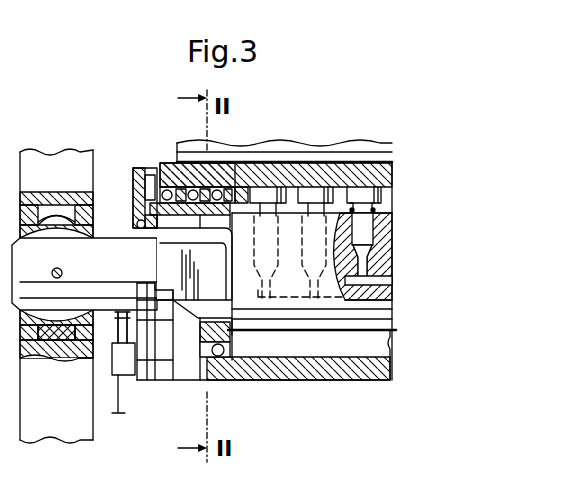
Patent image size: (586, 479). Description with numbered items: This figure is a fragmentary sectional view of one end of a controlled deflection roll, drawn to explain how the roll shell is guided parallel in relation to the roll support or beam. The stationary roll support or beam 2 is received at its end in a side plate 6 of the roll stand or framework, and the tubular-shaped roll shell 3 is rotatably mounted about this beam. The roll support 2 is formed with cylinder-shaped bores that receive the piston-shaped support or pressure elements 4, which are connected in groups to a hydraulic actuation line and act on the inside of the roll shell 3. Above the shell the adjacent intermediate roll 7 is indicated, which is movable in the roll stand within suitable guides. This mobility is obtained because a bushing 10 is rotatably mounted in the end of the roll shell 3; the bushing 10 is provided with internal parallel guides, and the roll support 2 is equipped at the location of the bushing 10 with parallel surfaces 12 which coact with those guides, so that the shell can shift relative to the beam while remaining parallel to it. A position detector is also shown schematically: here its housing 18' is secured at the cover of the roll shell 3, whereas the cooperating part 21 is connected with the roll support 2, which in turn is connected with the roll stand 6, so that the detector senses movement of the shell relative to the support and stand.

The roll support or beam 2 is at (292, 315).
The roll shell 3 is at (342, 372).
The support or pressure element 4 is at (263, 192).
The side plate of the roll stand 6 is at (62, 154).
The intermediate roll 7 is at (327, 154).
The bushing 10 is at (238, 207).
The parallel surface 12 is at (172, 263).
The housing of the position detector 18' is at (141, 368).
The part of the position detector 21 is at (121, 333).